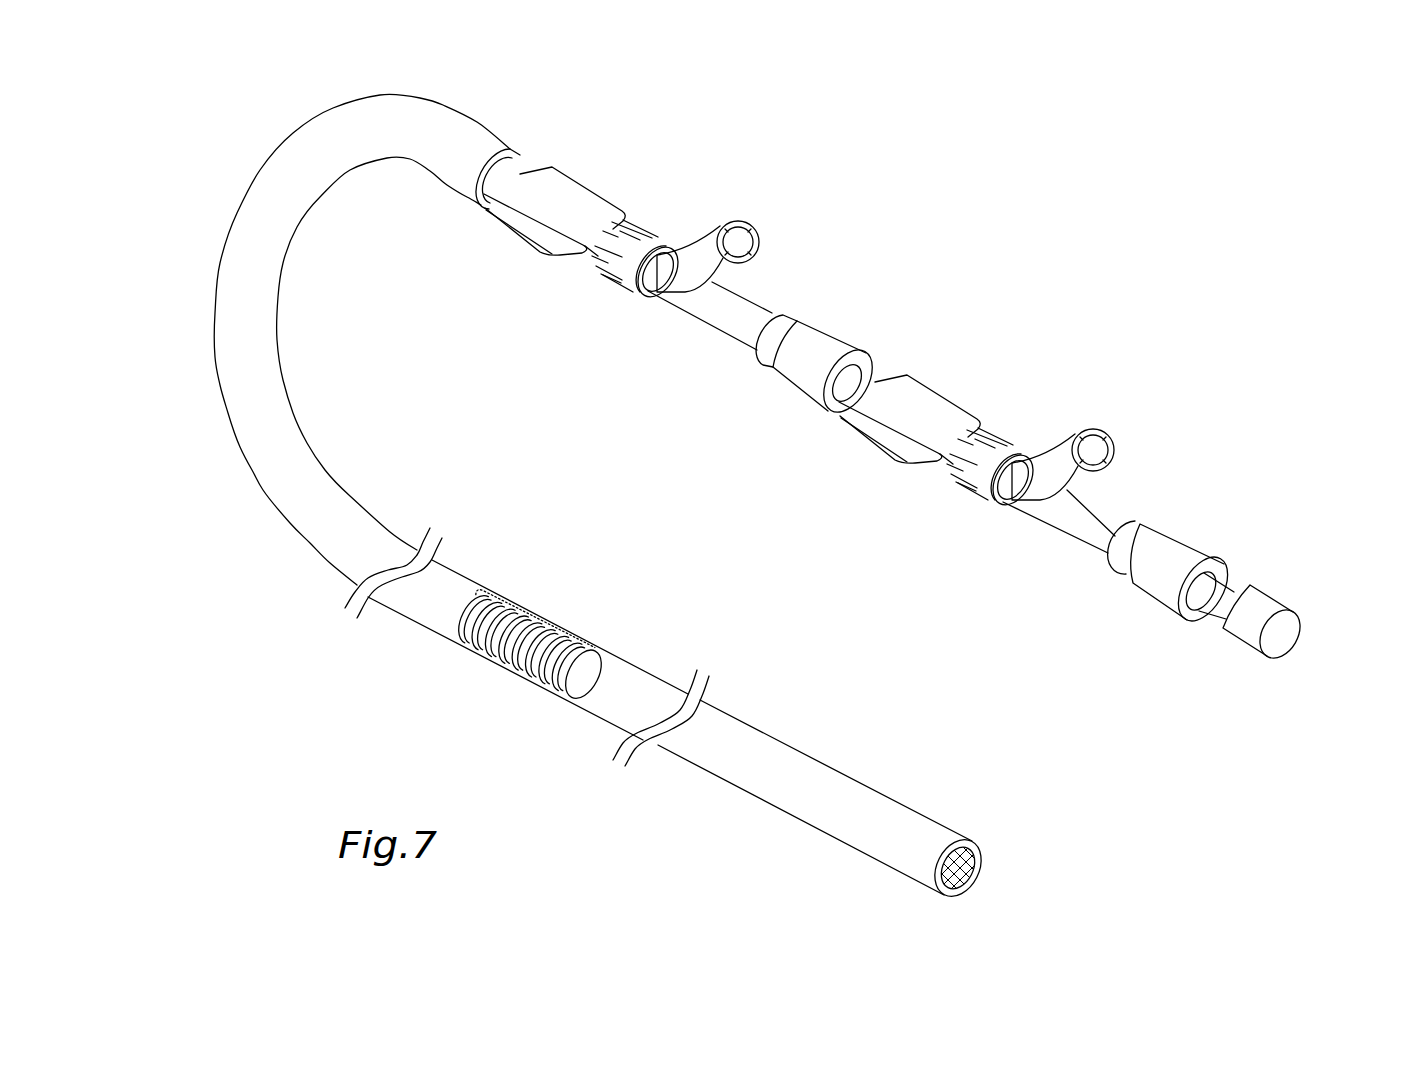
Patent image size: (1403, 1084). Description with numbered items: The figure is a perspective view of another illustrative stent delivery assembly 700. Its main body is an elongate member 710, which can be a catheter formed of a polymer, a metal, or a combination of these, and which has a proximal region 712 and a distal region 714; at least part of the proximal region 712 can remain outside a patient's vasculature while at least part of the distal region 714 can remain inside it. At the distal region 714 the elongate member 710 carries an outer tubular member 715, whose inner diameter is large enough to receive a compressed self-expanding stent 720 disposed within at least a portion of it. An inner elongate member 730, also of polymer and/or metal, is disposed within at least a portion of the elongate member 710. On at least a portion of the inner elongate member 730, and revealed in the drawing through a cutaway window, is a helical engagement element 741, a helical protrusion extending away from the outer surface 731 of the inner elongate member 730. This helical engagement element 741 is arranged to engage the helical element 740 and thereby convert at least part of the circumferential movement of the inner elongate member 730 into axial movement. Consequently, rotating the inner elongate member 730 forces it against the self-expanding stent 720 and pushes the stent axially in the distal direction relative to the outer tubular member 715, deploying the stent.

The stent delivery assembly 700 is at (797, 243).
The elongate member 710 is at (264, 124).
The proximal region 712 is at (1188, 636).
The distal region 714 is at (711, 735).
The outer tubular member 715 is at (867, 803).
The self-expanding stent 720 is at (968, 872).
The inner elongate member 730 is at (1262, 610).
The outer surface 731 is at (529, 647).
The helical element 740 is at (517, 658).
The helical engagement element 741 is at (503, 612).